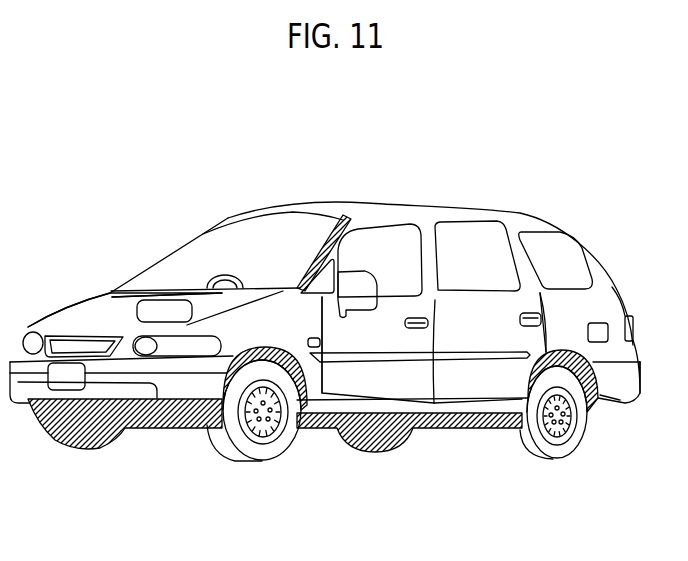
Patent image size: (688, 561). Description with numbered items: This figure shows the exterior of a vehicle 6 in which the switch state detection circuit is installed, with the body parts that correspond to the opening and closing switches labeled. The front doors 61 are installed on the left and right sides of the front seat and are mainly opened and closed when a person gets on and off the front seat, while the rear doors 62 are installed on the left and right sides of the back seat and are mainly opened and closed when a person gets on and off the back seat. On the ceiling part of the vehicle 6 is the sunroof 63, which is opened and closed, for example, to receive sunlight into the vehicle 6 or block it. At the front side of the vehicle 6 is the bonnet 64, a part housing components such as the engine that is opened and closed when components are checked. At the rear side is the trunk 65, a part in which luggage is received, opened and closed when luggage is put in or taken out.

The vehicle 6 is at (598, 107).
The front doors 61 is at (417, 368).
The rear doors 62 is at (500, 373).
The sunroof 63 is at (367, 205).
The bonnet 64 is at (113, 310).
The trunk 65 is at (620, 283).